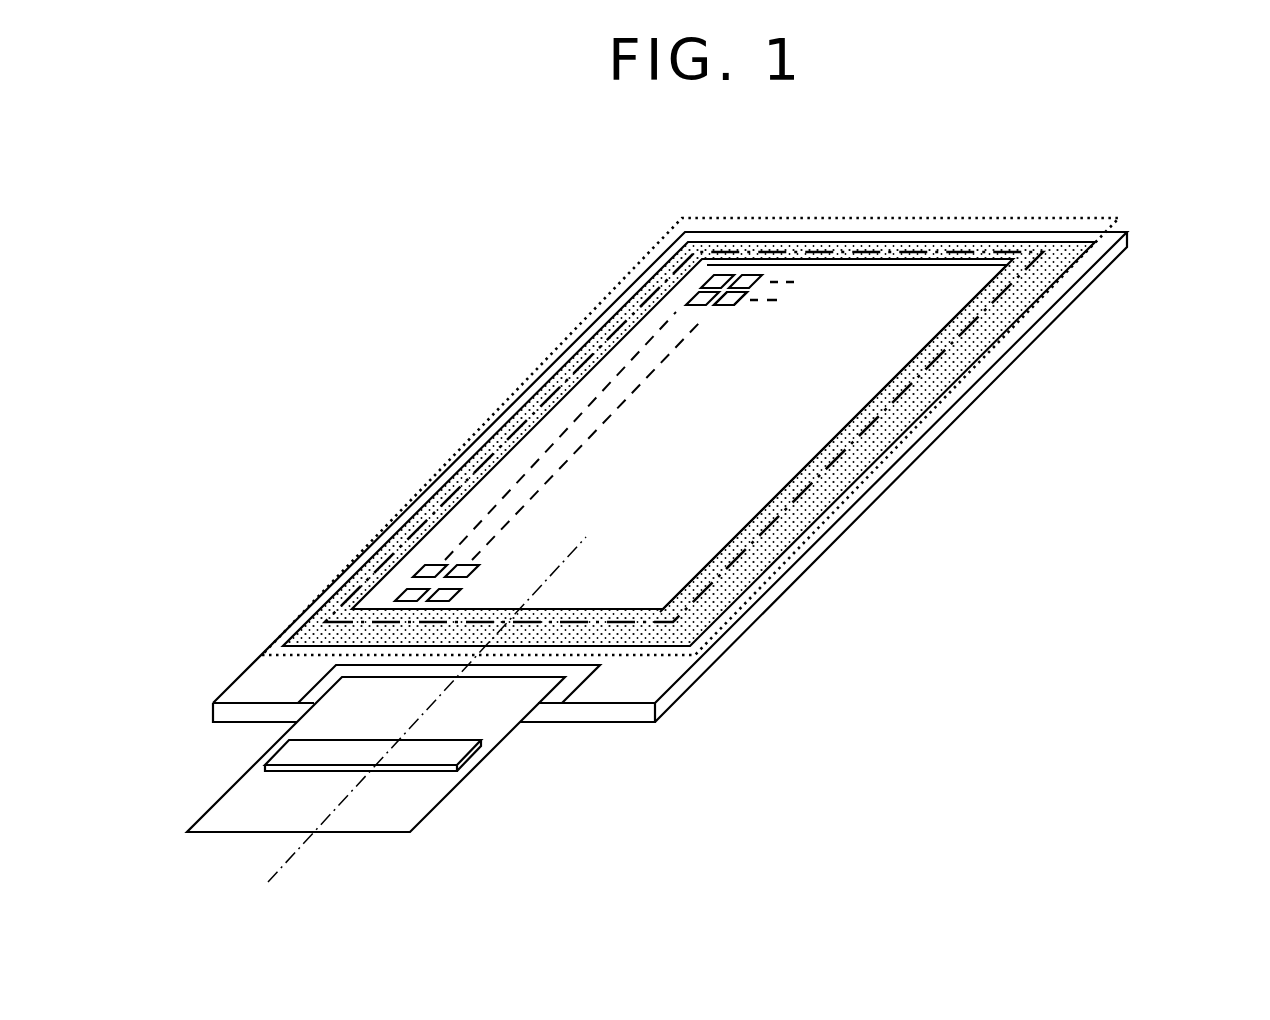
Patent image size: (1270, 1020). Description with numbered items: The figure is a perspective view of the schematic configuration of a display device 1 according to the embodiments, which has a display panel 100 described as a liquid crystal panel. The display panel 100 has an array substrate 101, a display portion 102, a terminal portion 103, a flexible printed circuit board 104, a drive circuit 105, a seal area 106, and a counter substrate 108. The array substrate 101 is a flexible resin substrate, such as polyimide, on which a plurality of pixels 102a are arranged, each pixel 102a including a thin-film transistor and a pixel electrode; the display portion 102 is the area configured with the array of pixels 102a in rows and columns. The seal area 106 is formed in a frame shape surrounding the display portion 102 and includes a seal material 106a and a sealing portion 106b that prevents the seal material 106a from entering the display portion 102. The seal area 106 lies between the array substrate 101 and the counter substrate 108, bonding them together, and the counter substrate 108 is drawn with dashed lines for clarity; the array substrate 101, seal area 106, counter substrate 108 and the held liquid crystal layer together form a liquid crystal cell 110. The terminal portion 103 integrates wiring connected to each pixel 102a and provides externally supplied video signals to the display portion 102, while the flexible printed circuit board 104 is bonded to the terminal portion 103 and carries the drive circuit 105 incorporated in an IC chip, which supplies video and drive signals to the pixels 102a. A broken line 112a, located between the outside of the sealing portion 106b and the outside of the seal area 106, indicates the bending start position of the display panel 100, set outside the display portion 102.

The display device 1 is at (708, 163).
The display panel 100 is at (564, 290).
The array substrate 101 is at (700, 672).
The display portion 102 is at (857, 263).
The pixel 102a is at (732, 308).
The terminal portion 103 is at (583, 683).
The flexible printed circuit board 104 is at (500, 727).
The drive circuit 105 is at (478, 762).
The seal area 106 is at (689, 444).
The seal material 106a is at (753, 565).
The sealing portion 106b is at (708, 575).
The counter substrate 108 is at (900, 216).
The liquid crystal cell 110 is at (1132, 218).
The broken line 112a is at (809, 480).